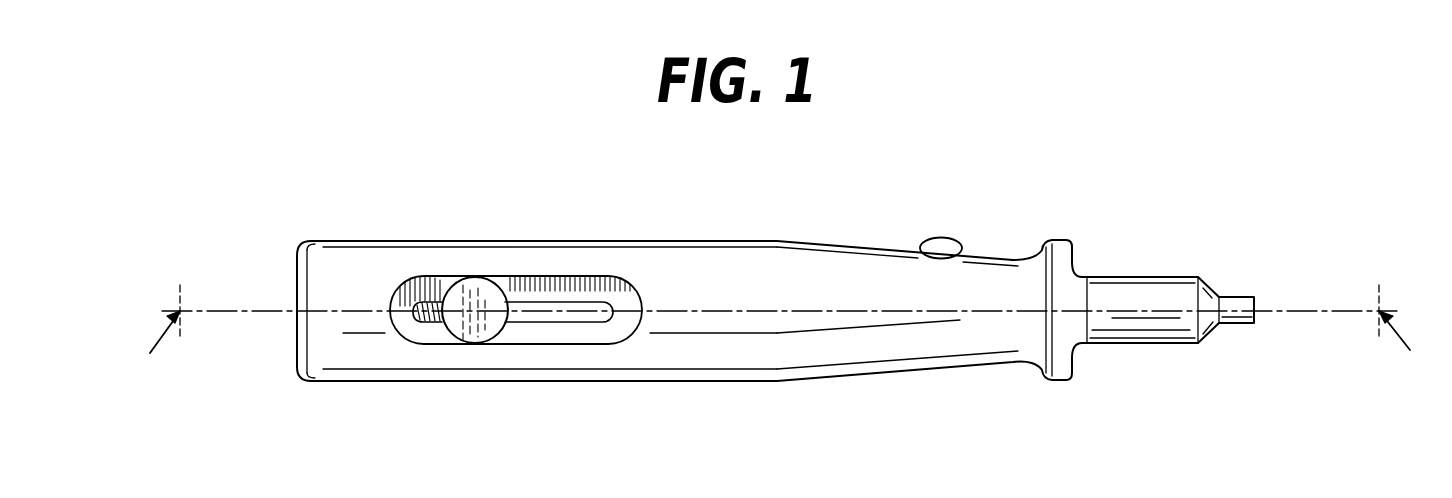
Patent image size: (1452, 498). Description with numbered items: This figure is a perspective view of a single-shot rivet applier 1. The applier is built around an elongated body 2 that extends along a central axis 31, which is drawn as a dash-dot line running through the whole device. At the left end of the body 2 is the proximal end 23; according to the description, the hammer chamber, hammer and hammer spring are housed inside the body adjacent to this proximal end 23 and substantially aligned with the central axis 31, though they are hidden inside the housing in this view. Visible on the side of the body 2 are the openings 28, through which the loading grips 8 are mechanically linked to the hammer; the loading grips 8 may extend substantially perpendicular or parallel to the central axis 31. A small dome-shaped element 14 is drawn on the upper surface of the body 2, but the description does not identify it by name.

The rivet applier 1 is at (365, 404).
The body 2 is at (528, 240).
The loading grips 8 is at (470, 335).
The push button 14 is at (942, 237).
The proximal end 23 is at (303, 244).
The openings 28 is at (583, 303).
The central axis 31 is at (237, 312).